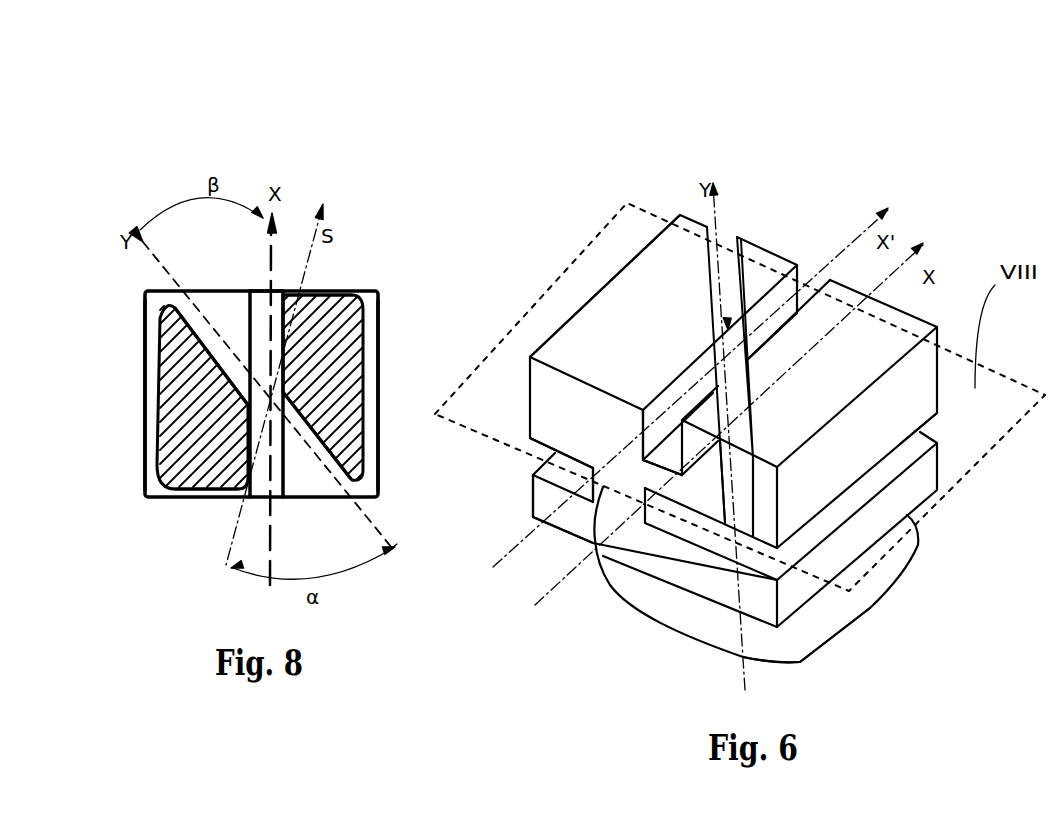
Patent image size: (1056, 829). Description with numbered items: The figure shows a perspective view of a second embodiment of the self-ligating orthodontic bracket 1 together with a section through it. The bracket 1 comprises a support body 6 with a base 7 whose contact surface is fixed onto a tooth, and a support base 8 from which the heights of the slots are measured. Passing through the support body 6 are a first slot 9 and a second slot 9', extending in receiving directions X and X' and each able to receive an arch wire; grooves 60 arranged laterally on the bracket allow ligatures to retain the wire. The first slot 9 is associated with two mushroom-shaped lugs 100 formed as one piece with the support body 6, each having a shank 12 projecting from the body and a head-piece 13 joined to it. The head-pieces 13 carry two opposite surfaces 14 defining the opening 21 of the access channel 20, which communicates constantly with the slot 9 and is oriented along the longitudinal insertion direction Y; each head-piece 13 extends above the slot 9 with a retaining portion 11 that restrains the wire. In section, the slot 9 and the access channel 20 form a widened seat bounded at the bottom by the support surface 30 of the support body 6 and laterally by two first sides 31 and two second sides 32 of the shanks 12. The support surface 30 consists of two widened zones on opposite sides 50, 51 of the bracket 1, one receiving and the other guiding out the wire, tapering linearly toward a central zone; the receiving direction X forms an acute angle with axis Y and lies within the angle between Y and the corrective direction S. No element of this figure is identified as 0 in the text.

In FIG. 8, the self-ligating orthodontic bracket 1 is at (400, 285).
In FIG. 6, the self-ligating orthodontic bracket 1 is at (926, 138).
In FIG. 6, the support body 6 is at (521, 283).
In FIG. 6, the base 7 is at (847, 610).
In FIG. 6, the support base 8 is at (805, 666).
In FIG. 8, the first slot 9 is at (291, 376).
In FIG. 6, the first slot 9 is at (683, 440).
In FIG. 6, the second slot 9' is at (551, 441).
In FIG. 6, the retaining portion 11 is at (633, 487).
In FIG. 8, the shanks 12 is at (220, 398).
In FIG. 6, the shanks 12 is at (595, 523).
In FIG. 6, the head-pieces 13 is at (530, 400).
In FIG. 6, the opposite surfaces 14 is at (810, 347).
In FIG. 6, the access channel 20 is at (730, 527).
In FIG. 6, the opening 21 is at (668, 300).
In FIG. 8, the support surface 30 is at (245, 327).
In FIG. 8, the first sides 31 is at (280, 333).
In FIG. 8, the second sides 32 is at (213, 330).
In FIG. 8, the side of the bracket 50 is at (335, 295).
In FIG. 8, the side of the bracket 51 is at (210, 497).
In FIG. 8, the grooves 60 is at (370, 387).
In FIG. 6, the grooves 60 is at (515, 461).
In FIG. 6, the lug 100 is at (667, 383).
In FIG. 8, the outer wall 0 is at (140, 433).